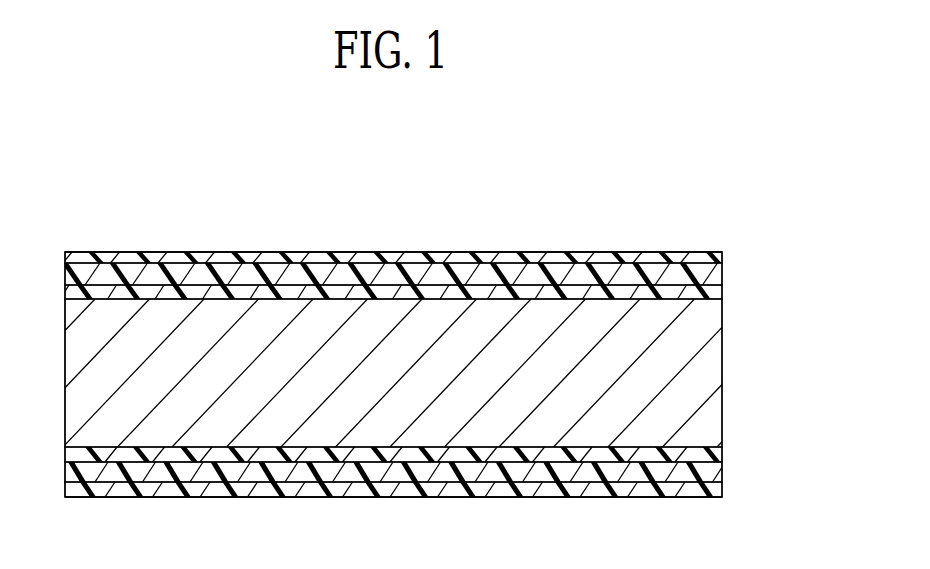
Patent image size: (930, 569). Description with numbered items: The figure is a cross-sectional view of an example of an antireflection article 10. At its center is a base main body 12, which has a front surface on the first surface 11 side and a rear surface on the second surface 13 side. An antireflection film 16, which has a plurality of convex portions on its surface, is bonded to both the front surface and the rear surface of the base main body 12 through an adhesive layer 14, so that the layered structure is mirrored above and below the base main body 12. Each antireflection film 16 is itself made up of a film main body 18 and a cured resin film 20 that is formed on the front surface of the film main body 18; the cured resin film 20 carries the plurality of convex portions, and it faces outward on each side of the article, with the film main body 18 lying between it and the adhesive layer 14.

The antireflection article 10 is at (366, 221).
The first surface 11 is at (643, 252).
The base main body 12 is at (712, 368).
The second surface 13 is at (636, 498).
The adhesive layer 14 is at (716, 292).
The antireflection film 16 is at (802, 223).
The film main body 18 is at (716, 279).
The cured resin film 20 is at (716, 256).